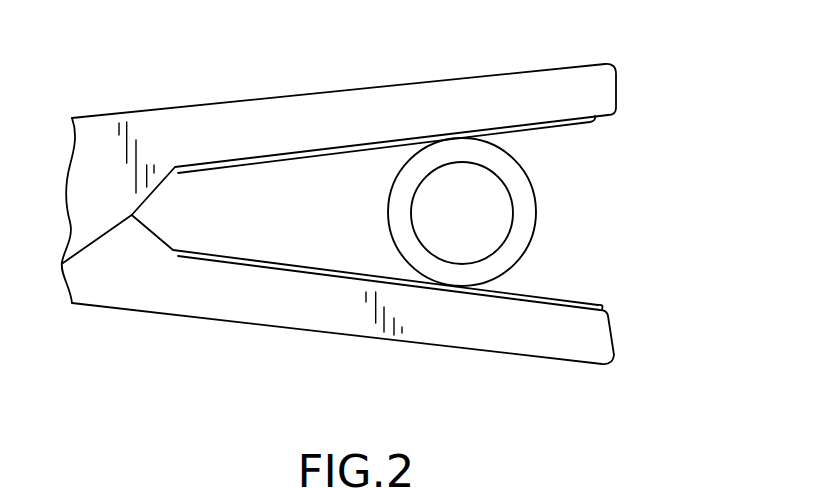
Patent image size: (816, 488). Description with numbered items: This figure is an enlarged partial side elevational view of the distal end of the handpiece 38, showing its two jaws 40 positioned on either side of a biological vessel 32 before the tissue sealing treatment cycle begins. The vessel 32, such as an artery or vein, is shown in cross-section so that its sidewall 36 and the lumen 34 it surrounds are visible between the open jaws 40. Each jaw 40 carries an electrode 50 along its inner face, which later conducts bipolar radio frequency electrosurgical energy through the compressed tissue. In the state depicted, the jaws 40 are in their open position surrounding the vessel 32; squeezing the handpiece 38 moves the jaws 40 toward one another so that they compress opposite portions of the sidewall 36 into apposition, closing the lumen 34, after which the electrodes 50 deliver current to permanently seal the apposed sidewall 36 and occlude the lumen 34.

The handpiece 38 is at (207, 83).
The jaws 40 is at (608, 87).
The electrodes 50 is at (587, 117).
The vessel 32 is at (537, 223).
The sidewall 36 is at (522, 190).
The lumen 34 is at (485, 227).